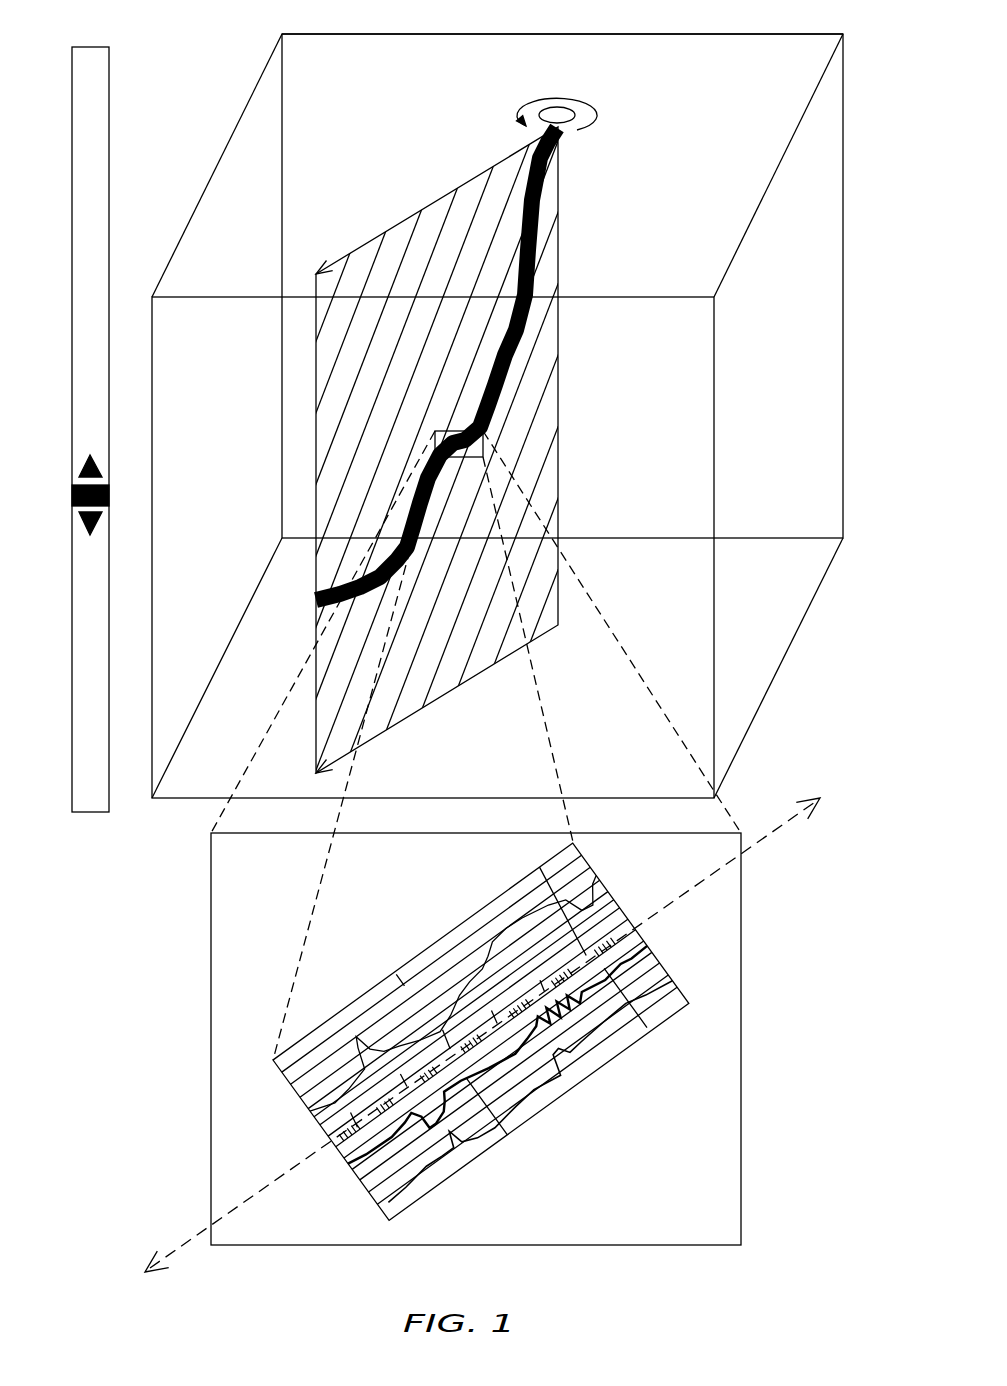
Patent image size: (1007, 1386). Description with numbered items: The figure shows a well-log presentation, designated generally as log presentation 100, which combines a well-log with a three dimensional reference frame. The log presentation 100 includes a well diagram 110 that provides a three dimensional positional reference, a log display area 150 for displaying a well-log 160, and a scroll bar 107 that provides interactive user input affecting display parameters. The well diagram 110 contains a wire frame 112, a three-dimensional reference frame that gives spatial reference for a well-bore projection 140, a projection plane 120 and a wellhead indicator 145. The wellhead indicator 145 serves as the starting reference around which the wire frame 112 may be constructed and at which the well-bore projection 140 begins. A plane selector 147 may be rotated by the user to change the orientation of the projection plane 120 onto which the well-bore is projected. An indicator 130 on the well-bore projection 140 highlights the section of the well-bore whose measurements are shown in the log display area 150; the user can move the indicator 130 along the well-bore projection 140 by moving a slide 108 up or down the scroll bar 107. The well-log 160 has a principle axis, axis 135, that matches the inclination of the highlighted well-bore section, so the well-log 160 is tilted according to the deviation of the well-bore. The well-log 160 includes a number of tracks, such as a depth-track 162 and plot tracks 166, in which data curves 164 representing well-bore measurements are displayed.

The log presentation 100 is at (747, 25).
The scroll bar 107 is at (109, 97).
The slide 108 is at (108, 495).
The well diagram 110 is at (806, 96).
The wire frame 112 is at (778, 668).
The projection plane 120 is at (439, 450).
The indicator 130 is at (476, 716).
The axis 135 is at (768, 835).
The well-bore projection 140 is at (469, 364).
The wellhead indicator 145 is at (584, 96).
The plane selector 147 is at (530, 100).
The log display area 150 is at (258, 881).
The well-log 160 is at (490, 1056).
The depth-track 162 is at (325, 1140).
The data curves 164 is at (603, 896).
The plot tracks 166 is at (293, 1092).